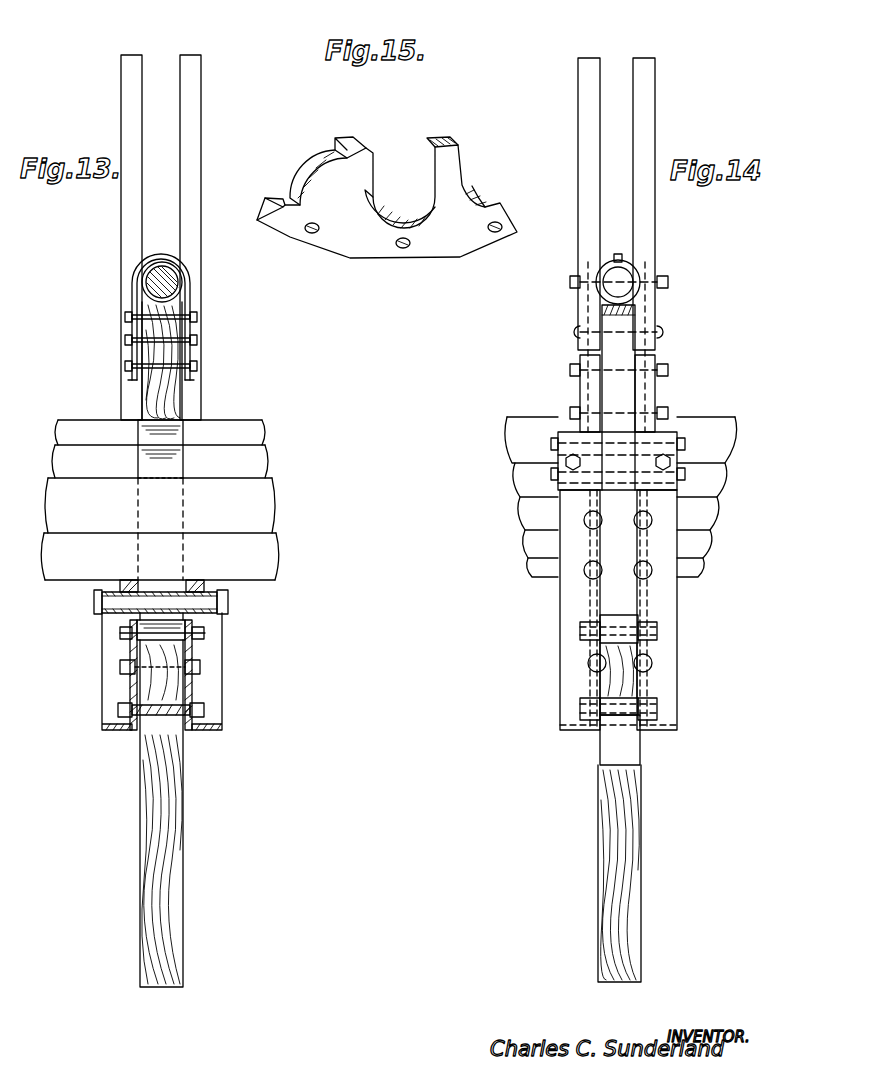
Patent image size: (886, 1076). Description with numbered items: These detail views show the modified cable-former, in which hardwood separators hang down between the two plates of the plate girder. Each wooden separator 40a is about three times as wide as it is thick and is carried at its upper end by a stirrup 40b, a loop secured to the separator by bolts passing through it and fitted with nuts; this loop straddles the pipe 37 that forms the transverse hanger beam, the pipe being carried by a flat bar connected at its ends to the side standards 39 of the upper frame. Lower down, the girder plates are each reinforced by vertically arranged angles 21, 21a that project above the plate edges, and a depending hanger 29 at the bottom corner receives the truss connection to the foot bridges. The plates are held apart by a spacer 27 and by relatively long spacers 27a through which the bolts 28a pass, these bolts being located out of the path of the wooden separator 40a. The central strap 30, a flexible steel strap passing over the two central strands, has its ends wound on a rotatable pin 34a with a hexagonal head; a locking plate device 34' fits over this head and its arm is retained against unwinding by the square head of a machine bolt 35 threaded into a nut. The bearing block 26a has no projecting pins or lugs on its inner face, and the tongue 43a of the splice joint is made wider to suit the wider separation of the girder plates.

In FIG. 13, the side standards 39 is at (189, 80).
In FIG. 14, the side standards 39 is at (643, 66).
In FIG. 13, the pipe 37 is at (178, 268).
In FIG. 13, the stirrup 40b is at (192, 282).
In FIG. 13, the central strap 30 is at (166, 474).
In FIG. 13, the bearing block 26a is at (286, 590).
In FIG. 15, the bearing block 26a is at (386, 238).
In FIG. 13, the bolt 28a is at (102, 606).
In FIG. 13, the spacer 27a is at (193, 621).
In FIG. 13, the locking plate device 34' is at (213, 650).
In FIG. 13, the rotatable pin 34a is at (128, 648).
In FIG. 13, the machine bolt 35 is at (126, 672).
In FIG. 13, the wooden separator 40a is at (167, 883).
In FIG. 14, the wooden separator 40a is at (617, 863).
In FIG. 14, the tongue 43a is at (612, 383).
In FIG. 14, the angle 21 is at (580, 597).
In FIG. 14, the angle 21a is at (660, 594).
In FIG. 14, the spacer 27 is at (605, 640).
In FIG. 14, the hanger 29 is at (620, 740).